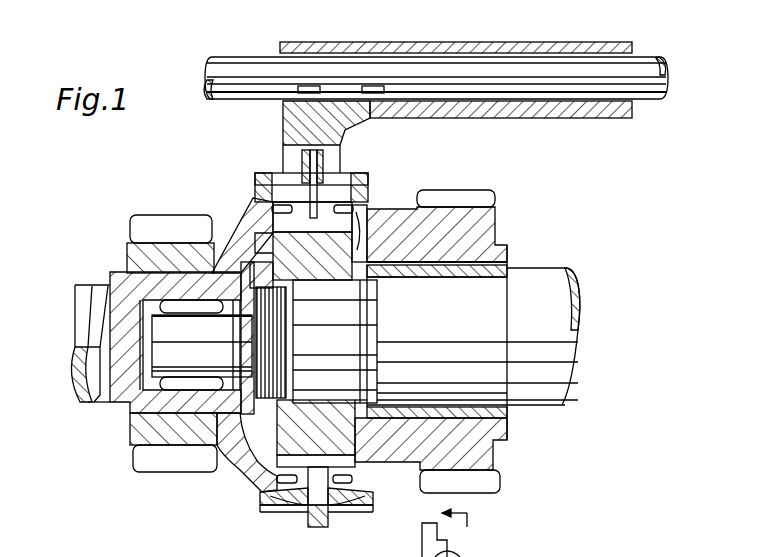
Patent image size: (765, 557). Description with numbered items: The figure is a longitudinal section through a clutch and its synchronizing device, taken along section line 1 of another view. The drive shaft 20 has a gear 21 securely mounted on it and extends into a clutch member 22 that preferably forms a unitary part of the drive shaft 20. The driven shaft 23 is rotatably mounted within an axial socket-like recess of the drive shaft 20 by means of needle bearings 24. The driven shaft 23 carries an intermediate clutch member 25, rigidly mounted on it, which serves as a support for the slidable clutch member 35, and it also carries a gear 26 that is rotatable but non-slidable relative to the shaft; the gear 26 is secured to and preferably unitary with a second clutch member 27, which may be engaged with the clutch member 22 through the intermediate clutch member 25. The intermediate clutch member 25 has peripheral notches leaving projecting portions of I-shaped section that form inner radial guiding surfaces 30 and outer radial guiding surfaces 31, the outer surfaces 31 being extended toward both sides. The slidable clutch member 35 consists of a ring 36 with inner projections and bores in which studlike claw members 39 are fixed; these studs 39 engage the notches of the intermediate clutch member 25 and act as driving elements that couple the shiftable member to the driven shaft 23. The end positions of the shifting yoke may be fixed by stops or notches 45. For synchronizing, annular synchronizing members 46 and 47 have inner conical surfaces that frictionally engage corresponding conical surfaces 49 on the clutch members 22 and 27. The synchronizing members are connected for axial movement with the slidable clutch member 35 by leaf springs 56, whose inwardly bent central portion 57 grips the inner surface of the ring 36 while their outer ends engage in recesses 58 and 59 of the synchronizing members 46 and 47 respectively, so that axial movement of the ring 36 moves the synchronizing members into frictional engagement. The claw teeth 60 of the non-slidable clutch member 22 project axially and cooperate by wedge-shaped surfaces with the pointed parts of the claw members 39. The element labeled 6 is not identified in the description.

The section line 1 is at (452, 533).
The housing rib 6 is at (358, 233).
The drive shaft 20 is at (123, 397).
The gear 21 is at (160, 469).
The clutch member 22 is at (280, 208).
The driven shaft 23 is at (552, 410).
The needle bearings 24 is at (203, 310).
The intermediate clutch member 25 is at (360, 450).
The gear 26 is at (495, 220).
The second clutch member 27 is at (403, 210).
The radial guiding surfaces 30 is at (246, 223).
The radial guiding surfaces 31 is at (345, 179).
The slidable clutch member 35 is at (300, 176).
The ring 36 is at (325, 166).
The studlike claw members 39 is at (362, 188).
The stops or notches 45 is at (326, 89).
The synchronizing member 46 is at (258, 193).
The synchronizing member 47 is at (350, 207).
The conical surfaces 49 is at (253, 481).
The leaf springs 56 is at (287, 513).
The central portion 57 is at (322, 528).
The recesses 58 is at (262, 501).
The recesses 59 is at (362, 507).
The claw teeth 60 is at (272, 204).